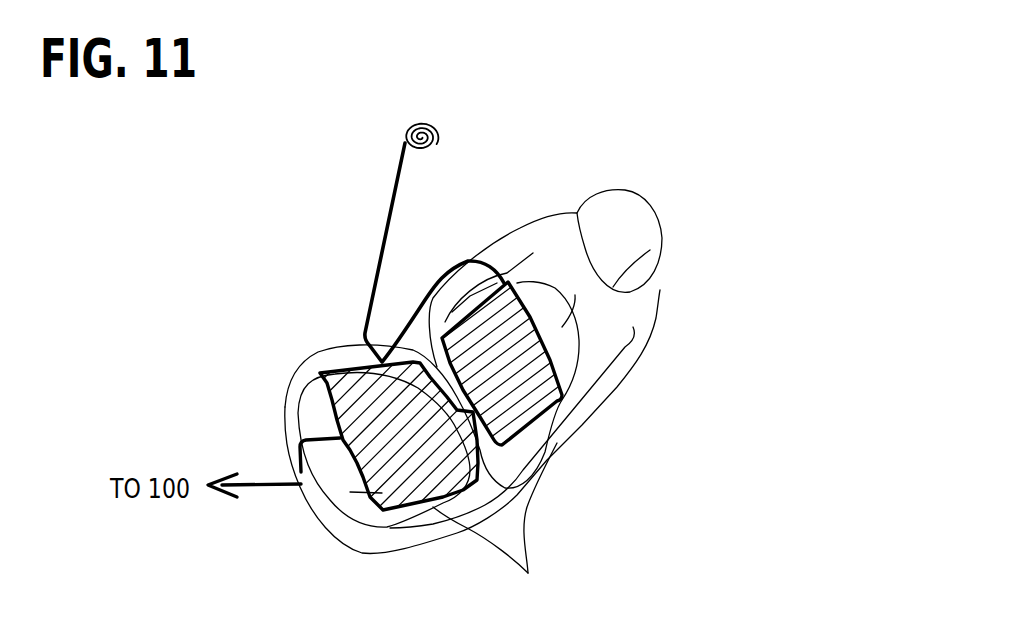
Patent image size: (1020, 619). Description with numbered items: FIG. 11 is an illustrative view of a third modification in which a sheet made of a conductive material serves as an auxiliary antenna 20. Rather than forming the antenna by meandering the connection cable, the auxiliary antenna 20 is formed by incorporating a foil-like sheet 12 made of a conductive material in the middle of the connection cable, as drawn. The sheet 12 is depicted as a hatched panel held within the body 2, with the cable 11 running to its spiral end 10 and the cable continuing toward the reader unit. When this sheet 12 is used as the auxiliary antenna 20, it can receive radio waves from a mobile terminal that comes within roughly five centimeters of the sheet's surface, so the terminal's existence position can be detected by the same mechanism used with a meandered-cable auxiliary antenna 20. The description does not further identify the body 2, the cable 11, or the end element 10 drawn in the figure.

The holder body 2 is at (588, 410).
The band end / spiral element 10 is at (440, 122).
The band 11 is at (380, 265).
The foil-like sheet 12 is at (441, 444).
The auxiliary antenna 20 is at (563, 327).